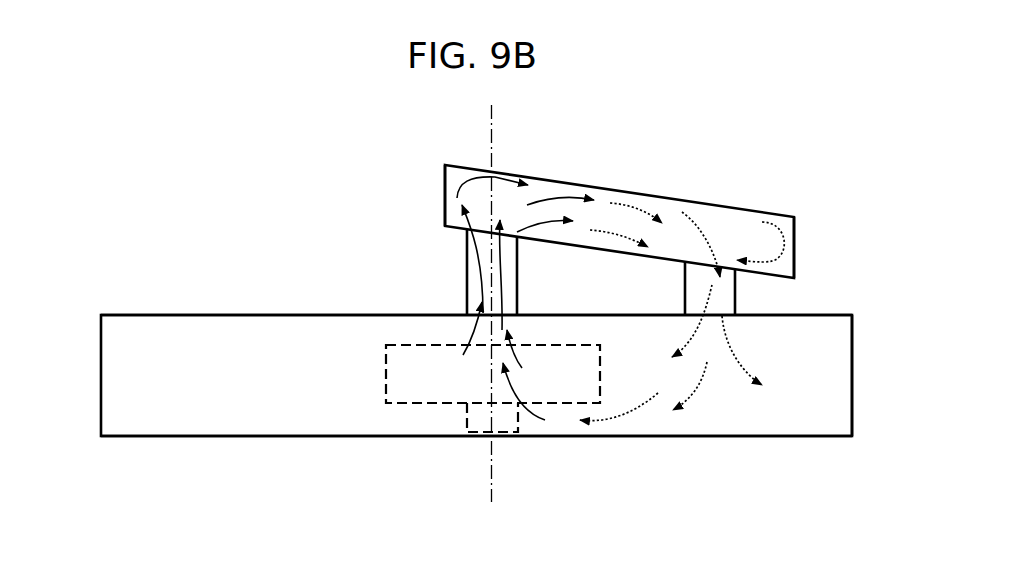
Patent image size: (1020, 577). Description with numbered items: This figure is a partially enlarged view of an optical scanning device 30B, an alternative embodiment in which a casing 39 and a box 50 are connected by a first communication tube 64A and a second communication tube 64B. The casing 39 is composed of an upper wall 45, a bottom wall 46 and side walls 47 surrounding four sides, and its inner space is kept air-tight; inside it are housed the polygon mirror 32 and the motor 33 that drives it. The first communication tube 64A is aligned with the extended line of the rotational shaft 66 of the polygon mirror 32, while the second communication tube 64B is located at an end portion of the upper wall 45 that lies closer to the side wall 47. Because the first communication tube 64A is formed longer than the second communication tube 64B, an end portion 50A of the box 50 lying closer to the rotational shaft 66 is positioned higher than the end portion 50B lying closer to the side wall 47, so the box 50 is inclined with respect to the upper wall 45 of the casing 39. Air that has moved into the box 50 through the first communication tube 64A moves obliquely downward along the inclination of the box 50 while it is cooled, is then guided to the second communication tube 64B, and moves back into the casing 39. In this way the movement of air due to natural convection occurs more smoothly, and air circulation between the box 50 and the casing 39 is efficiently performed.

The optical scanning device 30B is at (252, 212).
The casing 39 is at (99, 316).
The upper wall 45 is at (270, 316).
The bottom wall 46 is at (308, 438).
The side wall 47 is at (852, 393).
The box 50 is at (640, 178).
The end portion of the box 50A is at (466, 166).
The end portion of the box 50B is at (773, 215).
The first communication tube 64A is at (467, 254).
The second communication tube 64B is at (736, 292).
The polygon mirror 32 is at (386, 369).
The motor 33 is at (506, 438).
The rotational shaft 66 is at (492, 138).